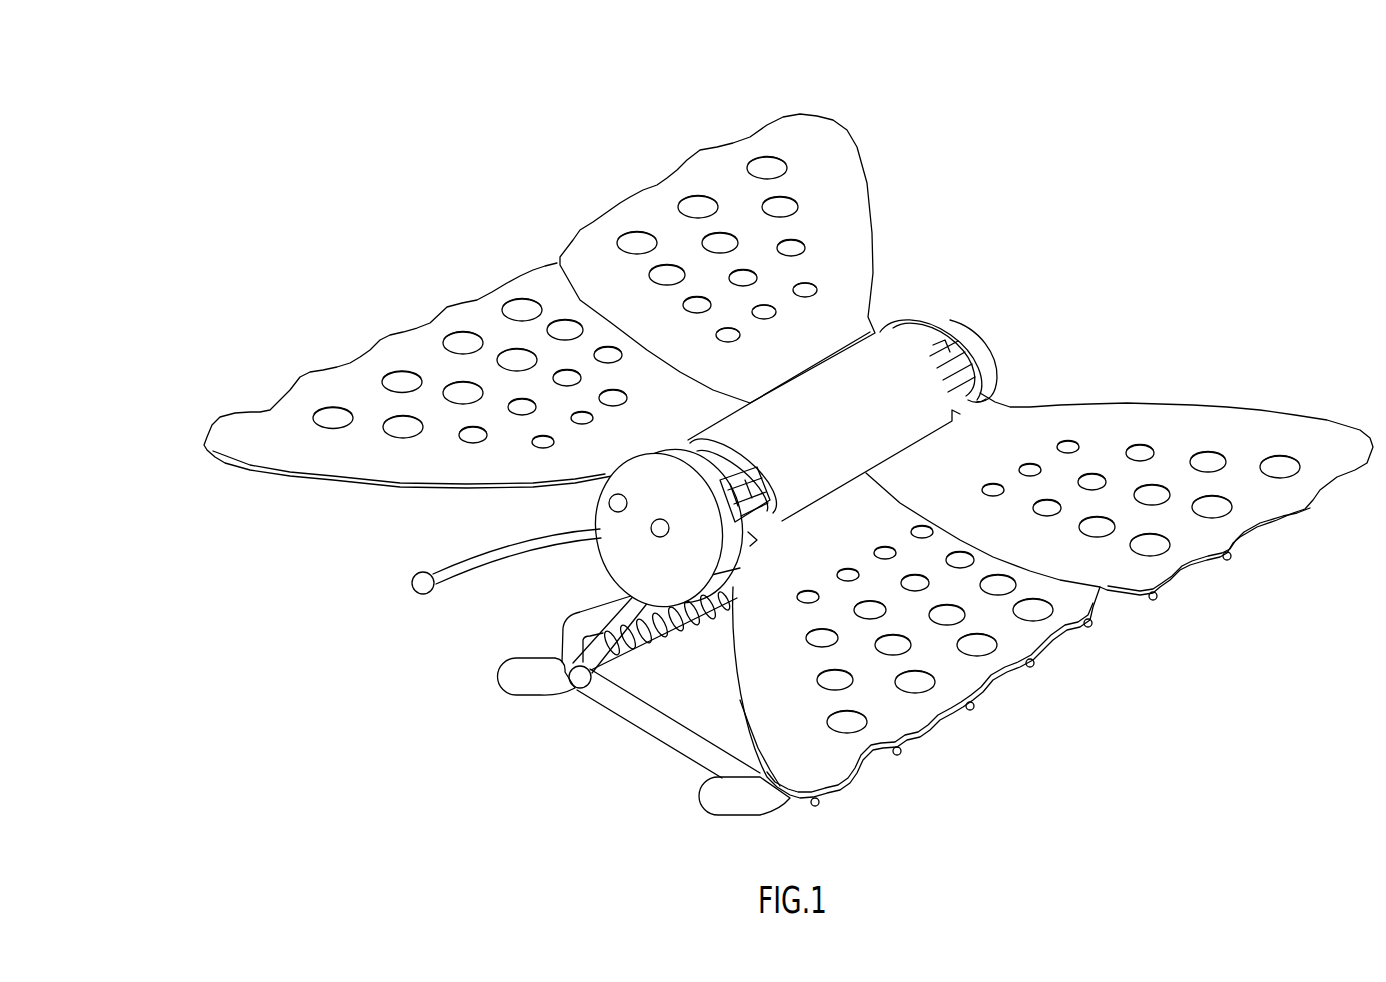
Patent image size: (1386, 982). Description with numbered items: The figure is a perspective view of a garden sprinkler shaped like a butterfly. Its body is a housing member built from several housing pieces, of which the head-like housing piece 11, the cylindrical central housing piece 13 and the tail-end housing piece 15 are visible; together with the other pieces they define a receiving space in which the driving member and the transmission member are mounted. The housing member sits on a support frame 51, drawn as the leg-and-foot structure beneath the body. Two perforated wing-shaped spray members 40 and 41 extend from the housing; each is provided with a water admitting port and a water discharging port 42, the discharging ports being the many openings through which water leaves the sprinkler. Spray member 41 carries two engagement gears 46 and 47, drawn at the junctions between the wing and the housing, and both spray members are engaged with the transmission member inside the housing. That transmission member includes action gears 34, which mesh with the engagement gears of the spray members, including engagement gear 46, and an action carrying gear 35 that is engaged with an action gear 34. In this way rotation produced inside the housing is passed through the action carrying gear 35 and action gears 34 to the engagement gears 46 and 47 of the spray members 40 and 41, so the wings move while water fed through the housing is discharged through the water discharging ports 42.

The housing piece 11 is at (615, 563).
The housing piece 13 is at (878, 353).
The housing piece 15 is at (973, 343).
The action gear 34 is at (728, 498).
The action carrying gear 35 is at (937, 330).
The spray member 40 is at (806, 130).
The spray member 41 is at (1140, 577).
The water discharging port 42 is at (1029, 668).
The engagement gear 46 is at (760, 517).
The engagement gear 47 is at (990, 397).
The support frame 51 is at (545, 685).